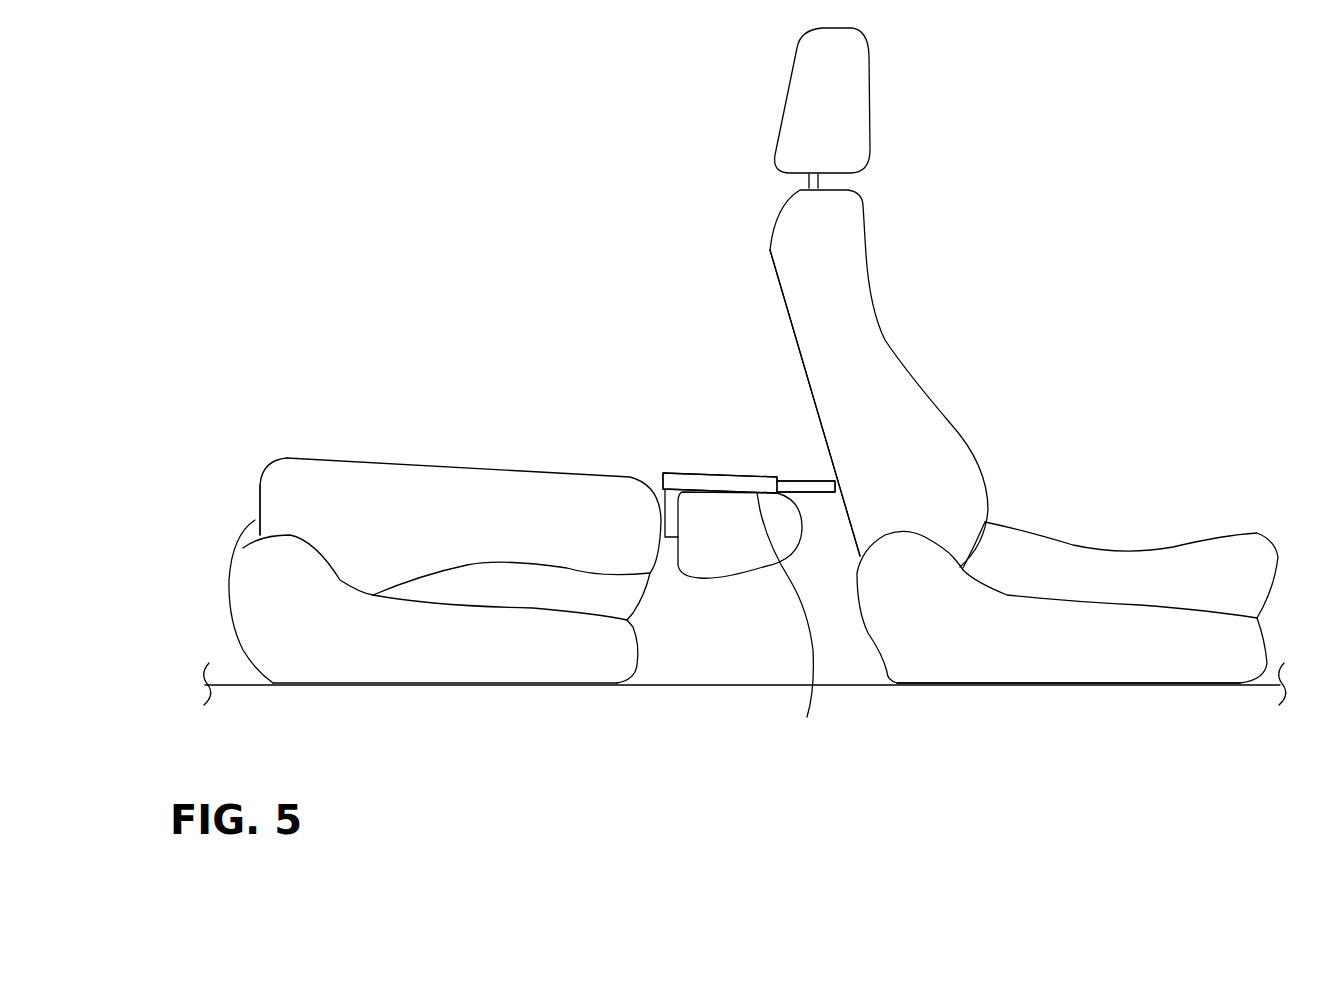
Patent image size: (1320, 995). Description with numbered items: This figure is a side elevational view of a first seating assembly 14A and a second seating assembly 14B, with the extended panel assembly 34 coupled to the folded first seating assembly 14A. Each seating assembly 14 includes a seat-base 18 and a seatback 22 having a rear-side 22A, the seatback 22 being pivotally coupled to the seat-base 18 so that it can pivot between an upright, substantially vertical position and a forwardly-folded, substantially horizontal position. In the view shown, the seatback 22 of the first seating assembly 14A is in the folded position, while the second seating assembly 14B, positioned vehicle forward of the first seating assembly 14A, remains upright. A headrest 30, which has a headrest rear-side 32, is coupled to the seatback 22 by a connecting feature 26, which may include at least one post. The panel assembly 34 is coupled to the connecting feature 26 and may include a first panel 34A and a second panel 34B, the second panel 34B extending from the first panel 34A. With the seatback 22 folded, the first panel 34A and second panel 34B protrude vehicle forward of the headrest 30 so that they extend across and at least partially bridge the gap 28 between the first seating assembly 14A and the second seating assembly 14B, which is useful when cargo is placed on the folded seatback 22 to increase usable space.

The seating assembly 14 is at (342, 651).
The first seating assembly 14A is at (403, 710).
The second seating assembly 14B is at (982, 706).
The seat-base 18 is at (1057, 579).
The seatback 22 is at (849, 326).
The rear-side 22A is at (801, 368).
The connecting feature 26 is at (806, 185).
The gap 28 is at (757, 652).
The headrest 30 is at (824, 134).
The headrest rear-side 32 is at (783, 115).
The panel assembly 34 is at (686, 462).
The first panel 34A is at (737, 473).
The second panel 34B is at (810, 481).